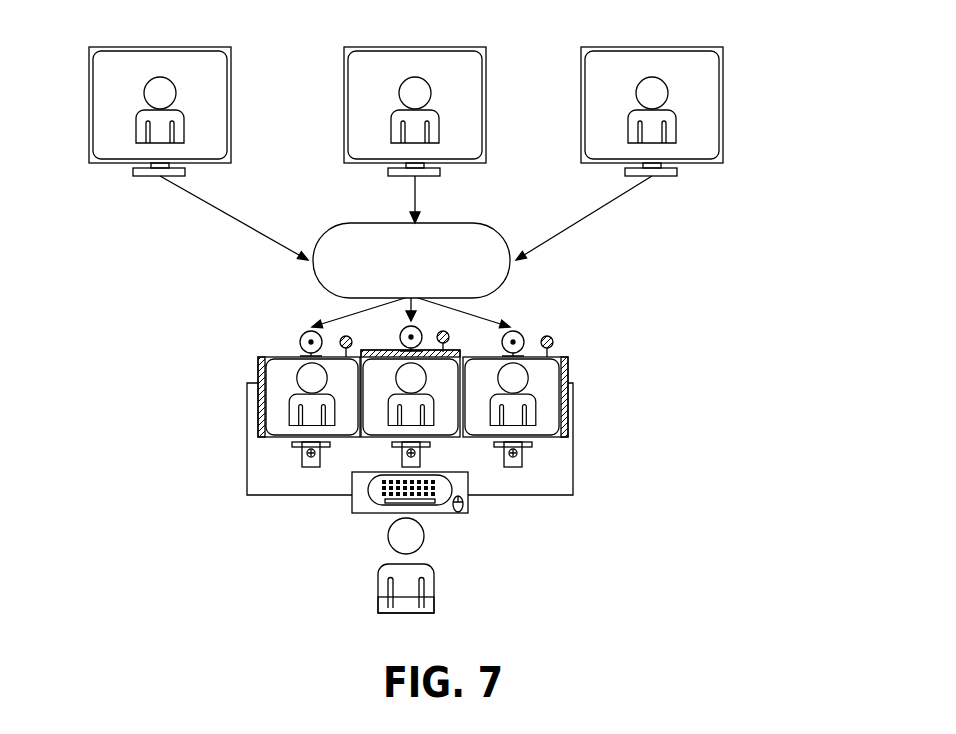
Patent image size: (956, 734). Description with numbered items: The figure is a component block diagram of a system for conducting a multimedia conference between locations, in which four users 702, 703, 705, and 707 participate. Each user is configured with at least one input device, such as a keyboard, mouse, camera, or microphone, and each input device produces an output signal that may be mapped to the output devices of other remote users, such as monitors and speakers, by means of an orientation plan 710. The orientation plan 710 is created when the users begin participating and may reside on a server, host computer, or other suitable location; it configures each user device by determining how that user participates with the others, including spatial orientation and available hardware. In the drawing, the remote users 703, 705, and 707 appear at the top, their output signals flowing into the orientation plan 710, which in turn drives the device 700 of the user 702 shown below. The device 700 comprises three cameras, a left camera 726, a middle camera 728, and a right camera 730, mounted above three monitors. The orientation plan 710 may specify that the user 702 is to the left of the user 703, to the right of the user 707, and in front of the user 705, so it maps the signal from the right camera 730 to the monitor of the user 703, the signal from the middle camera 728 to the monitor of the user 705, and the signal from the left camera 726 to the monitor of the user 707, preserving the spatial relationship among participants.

The device 700 is at (626, 317).
The user 702 is at (435, 568).
The user 703 is at (665, 80).
The user 705 is at (415, 75).
The user 707 is at (149, 85).
The orientation plan 710 is at (452, 229).
The left camera 726 is at (304, 333).
The middle camera 728 is at (414, 331).
The right camera 730 is at (519, 334).